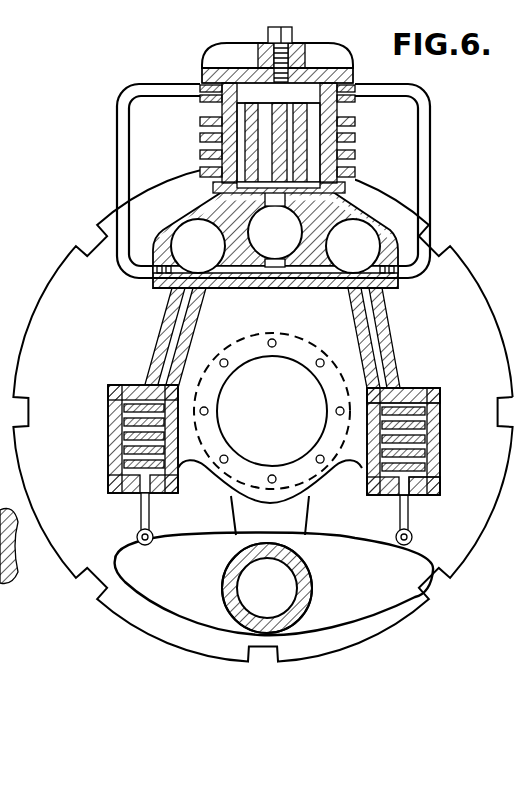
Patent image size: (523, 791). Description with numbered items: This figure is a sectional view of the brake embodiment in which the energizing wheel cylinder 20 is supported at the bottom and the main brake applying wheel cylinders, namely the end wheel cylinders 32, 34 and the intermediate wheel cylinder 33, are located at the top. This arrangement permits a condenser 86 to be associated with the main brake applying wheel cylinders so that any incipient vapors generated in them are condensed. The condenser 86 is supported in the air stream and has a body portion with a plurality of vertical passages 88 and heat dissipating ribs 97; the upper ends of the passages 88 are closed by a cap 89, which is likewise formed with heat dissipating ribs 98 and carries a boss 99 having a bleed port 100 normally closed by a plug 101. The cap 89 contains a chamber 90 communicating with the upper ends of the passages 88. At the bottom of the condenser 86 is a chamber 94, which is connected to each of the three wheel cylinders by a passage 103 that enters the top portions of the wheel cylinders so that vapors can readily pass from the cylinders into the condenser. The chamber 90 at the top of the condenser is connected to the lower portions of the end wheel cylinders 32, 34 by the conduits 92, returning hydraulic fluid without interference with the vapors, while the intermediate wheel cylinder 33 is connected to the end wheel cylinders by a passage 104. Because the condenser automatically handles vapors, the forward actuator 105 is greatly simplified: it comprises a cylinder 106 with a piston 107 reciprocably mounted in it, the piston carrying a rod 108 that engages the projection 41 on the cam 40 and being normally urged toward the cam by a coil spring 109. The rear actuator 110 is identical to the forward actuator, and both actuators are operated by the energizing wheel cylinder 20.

The energizing wheel cylinder 20 is at (313, 581).
The end wheel cylinder 32 is at (353, 246).
The intermediate wheel cylinder 33 is at (275, 232).
The end wheel cylinder 34 is at (198, 246).
The cam 40 is at (384, 592).
The projection 41 is at (415, 555).
The condenser 86 is at (312, 96).
The vertical passages 88 is at (317, 135).
The cap 89 is at (353, 80).
The chamber 90 is at (330, 66).
The conduits 92 is at (167, 83).
The chamber 94 is at (337, 168).
The heat dissipating ribs 97 is at (202, 118).
The heat dissipating ribs 98 is at (235, 53).
The boss 99 is at (268, 48).
The bleed port 100 is at (306, 70).
The plug 101 is at (282, 30).
The passage 103 is at (320, 250).
The passage 104 is at (272, 264).
The forward actuator 105 is at (434, 424).
The cylinder 106 is at (438, 437).
The piston 107 is at (425, 474).
The rod 108 is at (149, 502).
The coil spring 109 is at (400, 402).
The rear actuator 110 is at (110, 440).